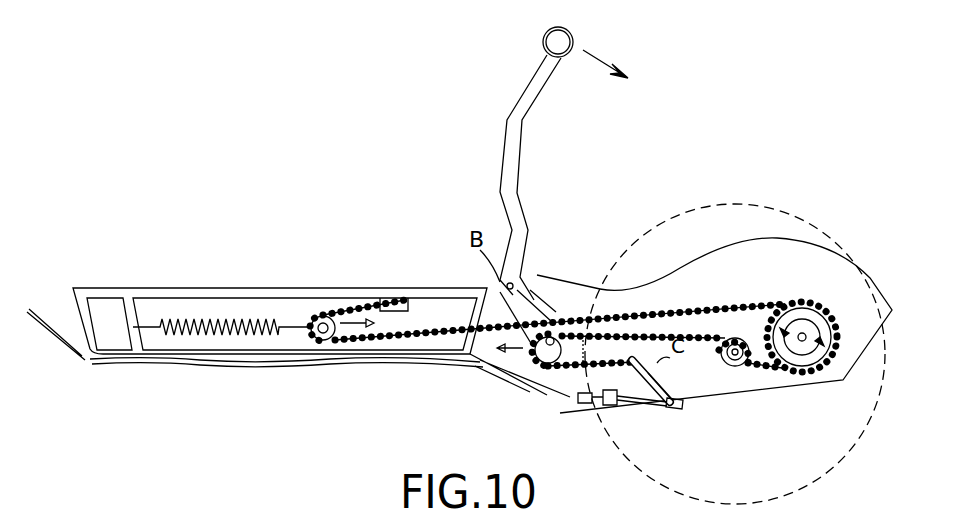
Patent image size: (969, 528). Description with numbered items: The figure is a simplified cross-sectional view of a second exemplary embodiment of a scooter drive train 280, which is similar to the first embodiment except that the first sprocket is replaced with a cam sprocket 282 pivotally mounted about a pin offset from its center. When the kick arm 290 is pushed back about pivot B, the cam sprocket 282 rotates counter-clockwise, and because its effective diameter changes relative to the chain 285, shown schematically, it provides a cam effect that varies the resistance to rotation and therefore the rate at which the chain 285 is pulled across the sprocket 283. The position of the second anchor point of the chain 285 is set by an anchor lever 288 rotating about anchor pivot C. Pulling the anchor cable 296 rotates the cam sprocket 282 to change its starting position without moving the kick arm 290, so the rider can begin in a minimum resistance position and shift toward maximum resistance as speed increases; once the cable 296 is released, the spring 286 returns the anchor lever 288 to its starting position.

The scooter drive train 280 is at (346, 221).
The cam sprocket 282 is at (546, 362).
The sprocket 283 is at (743, 368).
The chain 285 is at (378, 342).
The spring 286 is at (194, 320).
The anchor lever 288 is at (667, 380).
The kick arm 290 is at (523, 97).
The anchor cable 296 is at (633, 410).